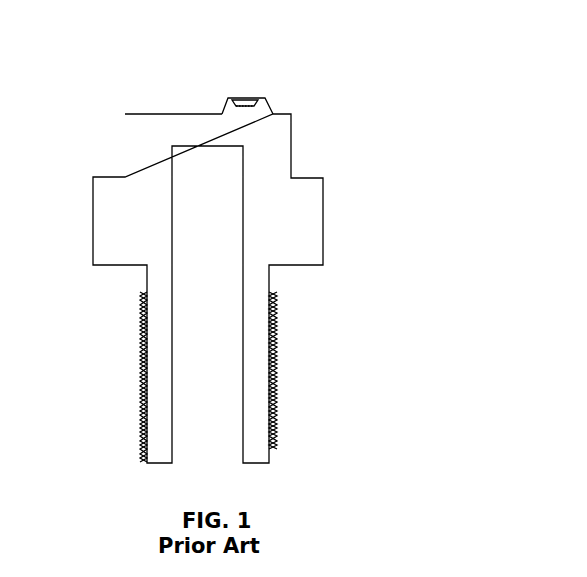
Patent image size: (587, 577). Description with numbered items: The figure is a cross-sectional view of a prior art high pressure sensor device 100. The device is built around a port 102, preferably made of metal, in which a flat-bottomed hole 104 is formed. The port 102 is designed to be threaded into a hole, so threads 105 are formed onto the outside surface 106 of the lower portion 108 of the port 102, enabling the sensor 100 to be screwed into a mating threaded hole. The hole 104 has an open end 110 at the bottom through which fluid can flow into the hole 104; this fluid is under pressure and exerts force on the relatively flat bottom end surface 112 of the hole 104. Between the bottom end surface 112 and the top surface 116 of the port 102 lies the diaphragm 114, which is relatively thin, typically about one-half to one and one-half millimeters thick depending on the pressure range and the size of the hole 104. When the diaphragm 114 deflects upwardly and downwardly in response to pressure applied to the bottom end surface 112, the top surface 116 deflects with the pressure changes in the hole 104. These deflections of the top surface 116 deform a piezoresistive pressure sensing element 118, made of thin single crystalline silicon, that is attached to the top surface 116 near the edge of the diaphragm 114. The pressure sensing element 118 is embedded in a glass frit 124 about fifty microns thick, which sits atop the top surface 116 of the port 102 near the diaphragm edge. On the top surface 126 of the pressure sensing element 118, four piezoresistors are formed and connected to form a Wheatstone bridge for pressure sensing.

The high pressure sensor device 100 is at (398, 119).
The port 102 is at (300, 215).
The flat-bottomed hole 104 is at (212, 280).
The threads 105 is at (276, 380).
The outside surface 106 is at (276, 312).
The lower portion 108 is at (136, 292).
The open end 110 is at (198, 442).
The bottom end surface 112 is at (208, 148).
The diaphragm 114 is at (203, 122).
The top surface 116 is at (124, 113).
The piezoresistive pressure sensing element 118 is at (258, 100).
The glass frit 124 is at (266, 105).
The top surface of the pressure sensing element 126 is at (244, 100).